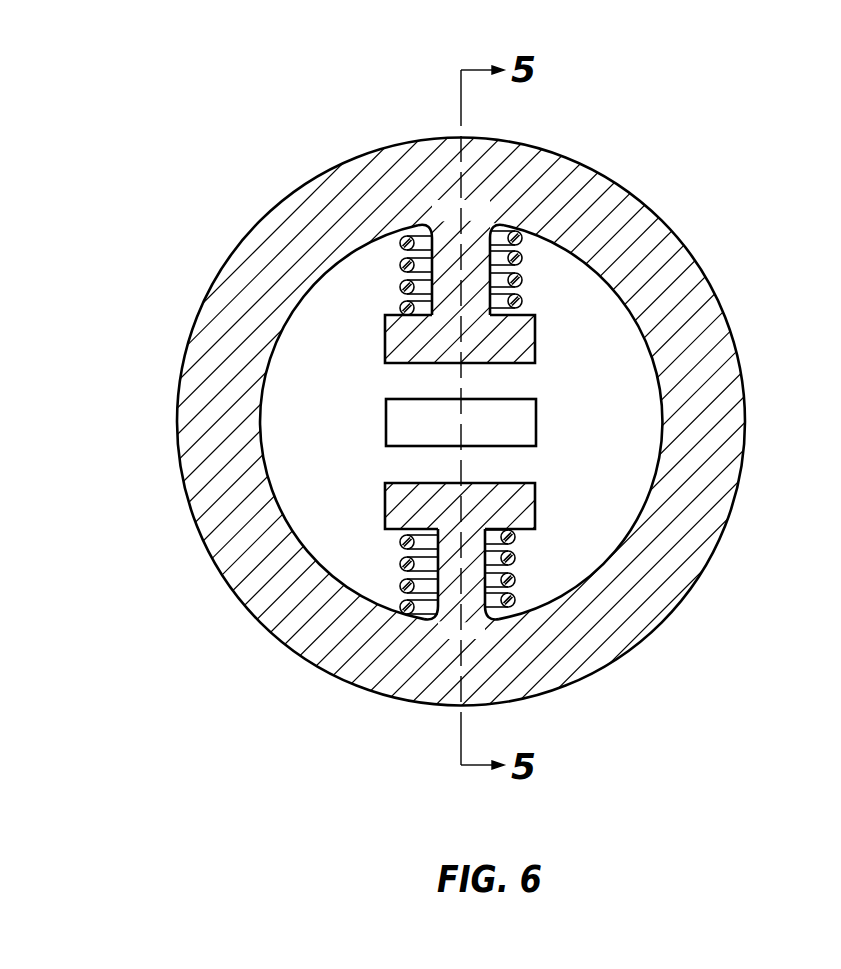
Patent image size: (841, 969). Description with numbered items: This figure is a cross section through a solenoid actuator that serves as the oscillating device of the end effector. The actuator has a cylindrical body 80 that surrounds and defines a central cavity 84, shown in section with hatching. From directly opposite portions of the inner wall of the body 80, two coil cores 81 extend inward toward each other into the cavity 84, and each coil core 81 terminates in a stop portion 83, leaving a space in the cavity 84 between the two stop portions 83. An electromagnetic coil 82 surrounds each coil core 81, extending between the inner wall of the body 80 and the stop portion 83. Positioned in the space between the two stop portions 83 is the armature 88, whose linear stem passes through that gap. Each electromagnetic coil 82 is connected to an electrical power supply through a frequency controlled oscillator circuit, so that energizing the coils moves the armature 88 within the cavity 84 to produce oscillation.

The cylindrical body 80 is at (258, 312).
The coil core 81 is at (455, 245).
The electromagnetic coil 82 is at (521, 278).
The stop portion 83 is at (415, 345).
The central cavity 84 is at (625, 420).
The armature 88 is at (413, 432).